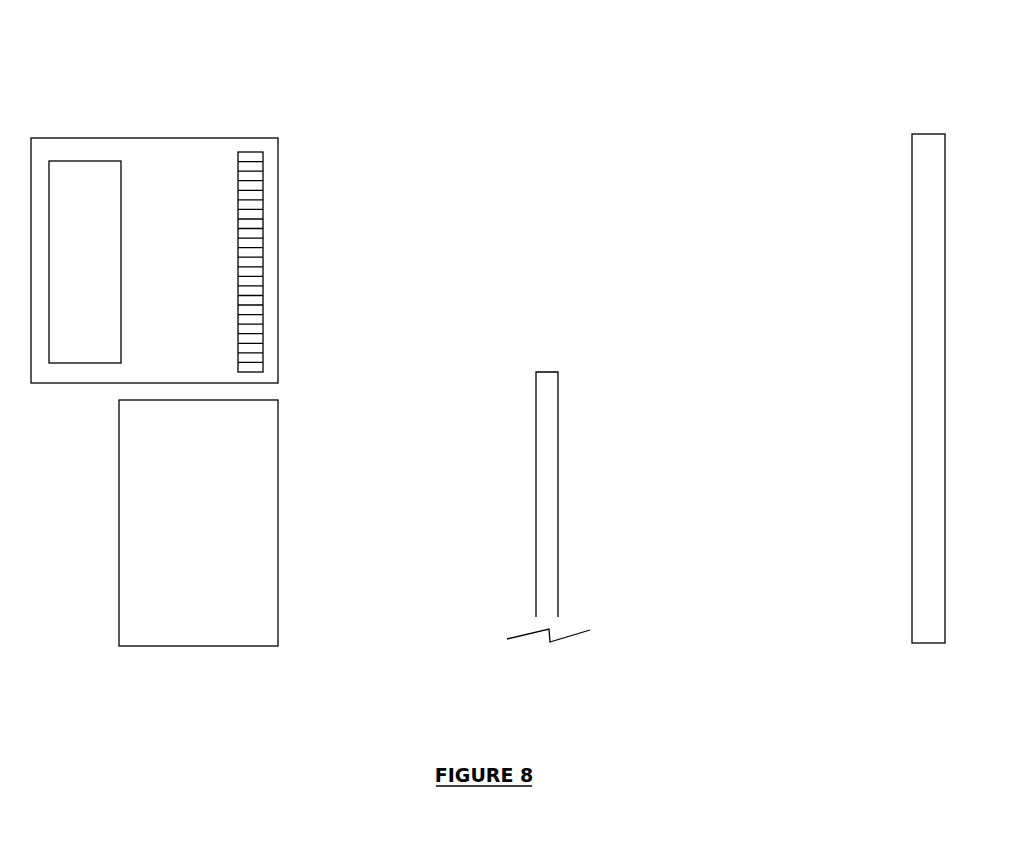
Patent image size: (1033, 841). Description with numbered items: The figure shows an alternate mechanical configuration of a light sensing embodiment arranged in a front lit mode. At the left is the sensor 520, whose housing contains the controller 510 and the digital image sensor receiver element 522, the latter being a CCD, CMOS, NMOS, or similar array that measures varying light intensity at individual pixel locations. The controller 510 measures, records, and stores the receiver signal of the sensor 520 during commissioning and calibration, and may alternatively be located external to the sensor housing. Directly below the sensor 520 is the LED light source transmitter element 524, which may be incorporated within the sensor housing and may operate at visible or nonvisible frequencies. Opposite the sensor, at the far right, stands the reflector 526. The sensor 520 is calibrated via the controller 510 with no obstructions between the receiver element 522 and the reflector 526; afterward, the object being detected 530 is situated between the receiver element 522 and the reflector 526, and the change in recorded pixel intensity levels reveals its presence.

The controller 510 is at (68, 157).
The sensor 520 is at (155, 133).
The digital image sensor receiver element 522 is at (268, 167).
The light source transmitter element 524 is at (202, 659).
The reflector 526 is at (920, 662).
The object being detected 530 is at (555, 353).